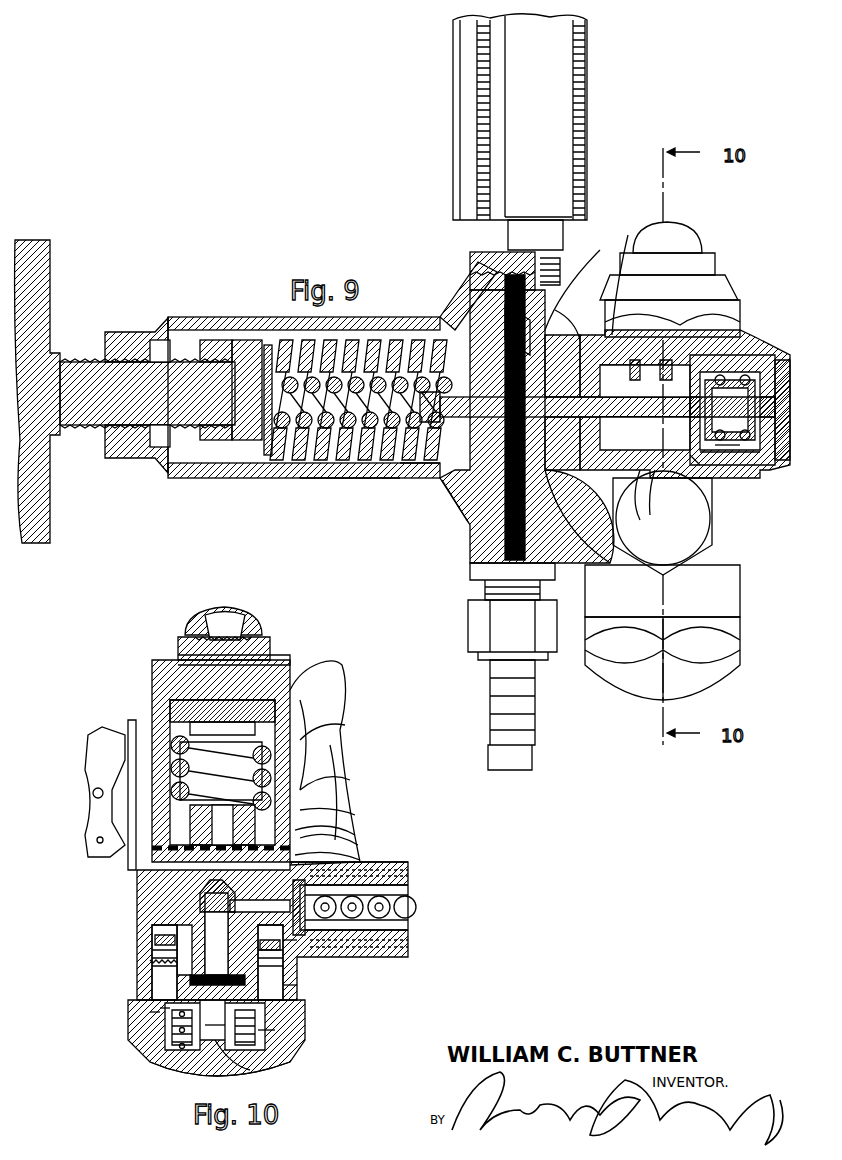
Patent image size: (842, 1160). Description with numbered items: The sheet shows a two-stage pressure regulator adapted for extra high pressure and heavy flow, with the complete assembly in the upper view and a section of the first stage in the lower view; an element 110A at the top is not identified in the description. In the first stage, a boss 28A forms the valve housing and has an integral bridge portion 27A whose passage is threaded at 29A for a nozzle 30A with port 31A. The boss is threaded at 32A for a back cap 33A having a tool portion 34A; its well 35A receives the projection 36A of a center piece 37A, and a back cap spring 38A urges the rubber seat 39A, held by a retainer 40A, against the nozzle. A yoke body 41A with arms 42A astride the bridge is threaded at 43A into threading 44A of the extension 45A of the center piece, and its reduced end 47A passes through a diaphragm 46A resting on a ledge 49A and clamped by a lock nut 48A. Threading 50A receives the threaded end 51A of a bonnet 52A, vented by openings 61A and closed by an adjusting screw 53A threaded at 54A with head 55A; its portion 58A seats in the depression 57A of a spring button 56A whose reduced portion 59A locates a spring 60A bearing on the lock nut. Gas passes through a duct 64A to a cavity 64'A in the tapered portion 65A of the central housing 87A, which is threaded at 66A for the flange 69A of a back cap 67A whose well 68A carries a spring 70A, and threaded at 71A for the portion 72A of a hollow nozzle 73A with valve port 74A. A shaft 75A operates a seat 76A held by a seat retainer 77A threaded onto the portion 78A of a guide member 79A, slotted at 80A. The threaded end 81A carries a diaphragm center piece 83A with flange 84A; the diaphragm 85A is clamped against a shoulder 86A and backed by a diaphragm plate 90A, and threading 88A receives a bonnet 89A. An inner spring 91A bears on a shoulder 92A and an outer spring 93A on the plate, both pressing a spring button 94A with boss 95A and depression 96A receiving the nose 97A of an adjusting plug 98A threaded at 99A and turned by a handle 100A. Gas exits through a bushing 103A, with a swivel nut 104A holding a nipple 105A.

In FIG. 9, the handle 100A is at (48, 243).
In FIG. 9, the threading of adjusting plug 99A is at (90, 360).
In FIG. 9, the point or nose of adjusting plug 97A is at (205, 345).
In FIG. 9, the central boss of spring button 95A is at (300, 325).
In FIG. 9, the spring button 94A is at (240, 415).
In FIG. 9, the adjusting plug 98A is at (215, 410).
In FIG. 9, the depression of spring button 96A is at (266, 350).
In FIG. 9, the outer helical spring 93A is at (300, 465).
In FIG. 9, the bonnet 89A is at (300, 475).
In FIG. 9, the inner spring 91A is at (430, 385).
In FIG. 9, the diaphragm 85A is at (480, 280).
In FIG. 9, the internal threading of diaphragm housing 88A is at (472, 262).
In FIG. 9, the shoulder of diaphragm plate 92A is at (512, 330).
In FIG. 9, the radially extending flange 84A is at (478, 540).
In FIG. 9, the diaphragm plate 90A is at (458, 505).
In FIG. 9, the threaded end of shaft 81A is at (438, 478).
In FIG. 9, the diaphragm center piece 83A is at (365, 472).
In FIG. 9, the center piece or shaft 75A is at (575, 338).
In FIG. 9, the internal threading of housing section 71A is at (640, 372).
In FIG. 9, the passage or duct 64A is at (684, 404).
In FIG. 9, the adjusting screw 53A is at (662, 225).
In FIG. 10, the adjusting screw 53A is at (258, 618).
In FIG. 9, the tapered portion 65A is at (612, 330).
In FIG. 9, the diaphragm housing 87A is at (555, 310).
In FIG. 9, the threaded portion of nozzle 72A is at (632, 360).
In FIG. 9, the hollow nozzle 73A is at (665, 360).
In FIG. 9, the spring 70A is at (770, 360).
In FIG. 9, the back cap 67A is at (735, 380).
In FIG. 9, the slot of guide member 80A is at (778, 368).
In FIG. 9, the seat retainer 77A is at (725, 365).
In FIG. 9, the internal threads of housing section 66A is at (712, 375).
In FIG. 9, the cylindrical well 68A is at (770, 440).
In FIG. 9, the guide member 79A is at (720, 465).
In FIG. 9, the enlarged threaded portion 78A is at (705, 460).
In FIG. 9, the externally threaded flange 69A is at (690, 470).
In FIG. 9, the seat portion 76A is at (682, 565).
In FIG. 9, the valve port 74A is at (648, 470).
In FIG. 9, the cavity 64'A is at (675, 502).
In FIG. 9, the shoulder 86A is at (580, 565).
In FIG. 9, the hollow bushing 103A is at (470, 572).
In FIG. 9, the swivel nut 104A is at (470, 628).
In FIG. 9, the nipple 105A is at (533, 757).
In FIG. 9, the tube 110A is at (570, 62).
In FIG. 10, the threads of adjusting screw 54A is at (215, 612).
In FIG. 10, the bonnet 52A is at (178, 648).
In FIG. 10, the slotted or hex head 55A is at (272, 640).
In FIG. 10, the depression of spring button 57A is at (155, 700).
In FIG. 10, the central reduced portion 59A is at (172, 710).
In FIG. 10, the shaped portion of adjusting screw 58A is at (300, 700).
In FIG. 10, the spring button 56A is at (280, 700).
In FIG. 10, the openings 61A is at (128, 745).
In FIG. 10, the helical spring 60A is at (330, 760).
In FIG. 10, the reduced threaded end of yoke body 47A is at (320, 770).
In FIG. 10, the threaded end of bonnet 51A is at (340, 790).
In FIG. 10, the internal threading of boss 50A is at (345, 810).
In FIG. 10, the diaphragm lock nut 48A is at (340, 835).
In FIG. 10, the diaphragm 46A is at (345, 855).
In FIG. 10, the ledge or shoulder 49A is at (360, 865).
In FIG. 10, the yoke body 41A is at (140, 878).
In FIG. 10, the bridge portion 27A is at (200, 900).
In FIG. 10, the internally threaded portion 29A is at (192, 935).
In FIG. 10, the boss 28A is at (155, 945).
In FIG. 10, the nozzle 30A is at (160, 958).
In FIG. 10, the yoke arms 42A is at (160, 948).
In FIG. 10, the extension of center piece 45A is at (150, 965).
In FIG. 10, the tool-receiving portion 34A is at (132, 1040).
In FIG. 10, the internal threading 44A is at (145, 1012).
In FIG. 10, the retainer 40A is at (165, 1010).
In FIG. 10, the center piece 37A is at (178, 1045).
In FIG. 10, the back cap 33A is at (178, 1068).
In FIG. 10, the cylindrical well 35A is at (250, 1045).
In FIG. 10, the cylindrical projection 36A is at (240, 1060).
In FIG. 10, the back cap spring 38A is at (265, 1030).
In FIG. 10, the valve seat member 39A is at (280, 1035).
In FIG. 10, the internal threading of boss 32A is at (290, 990).
In FIG. 10, the nozzle port 31A is at (290, 960).
In FIG. 10, the external threading of yoke arms 43A is at (285, 960).